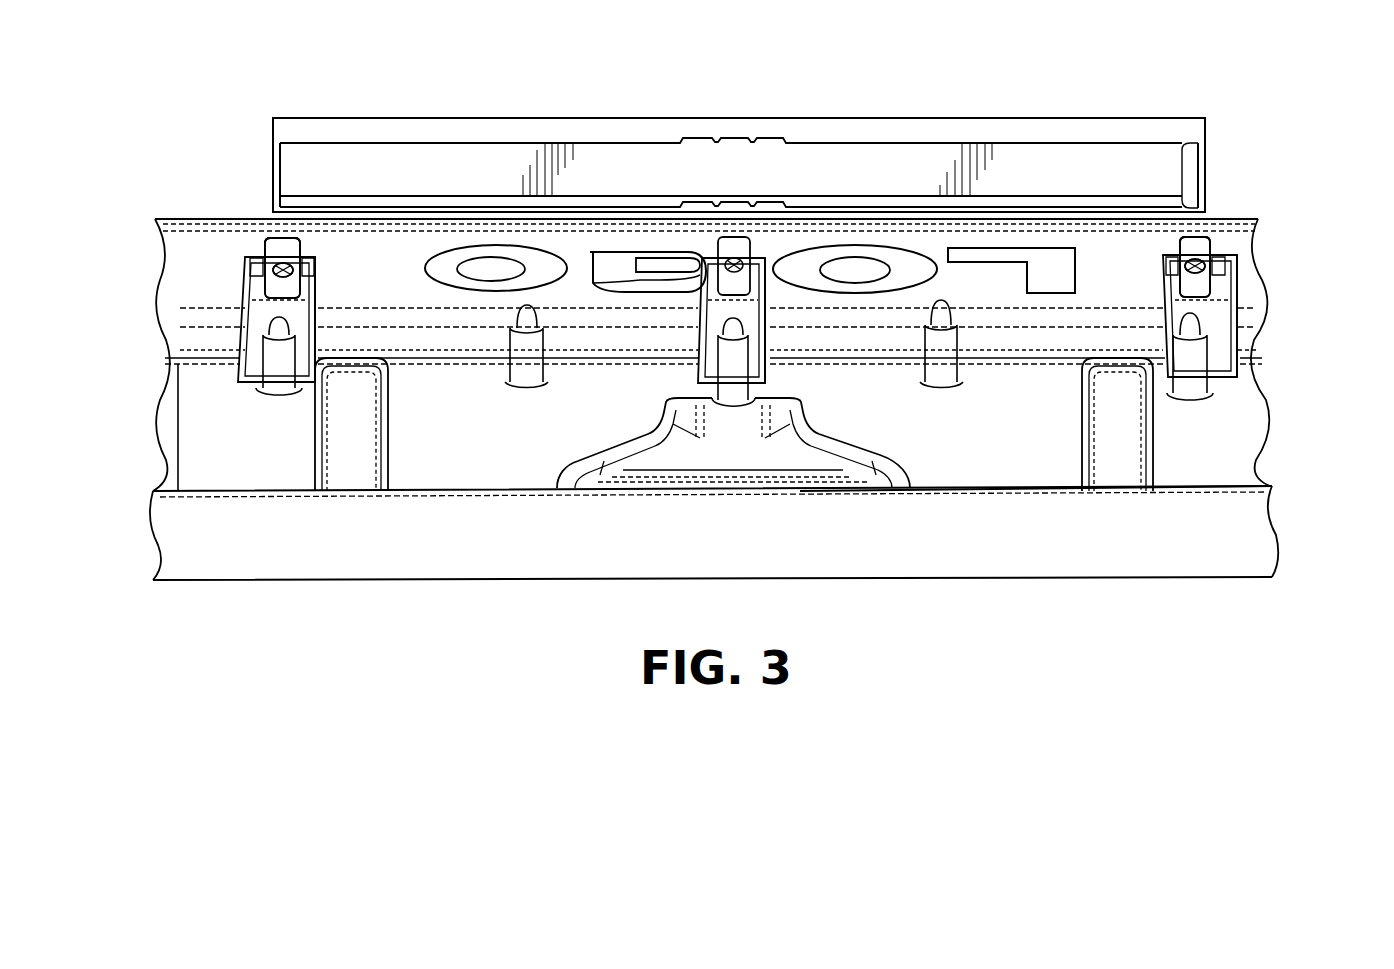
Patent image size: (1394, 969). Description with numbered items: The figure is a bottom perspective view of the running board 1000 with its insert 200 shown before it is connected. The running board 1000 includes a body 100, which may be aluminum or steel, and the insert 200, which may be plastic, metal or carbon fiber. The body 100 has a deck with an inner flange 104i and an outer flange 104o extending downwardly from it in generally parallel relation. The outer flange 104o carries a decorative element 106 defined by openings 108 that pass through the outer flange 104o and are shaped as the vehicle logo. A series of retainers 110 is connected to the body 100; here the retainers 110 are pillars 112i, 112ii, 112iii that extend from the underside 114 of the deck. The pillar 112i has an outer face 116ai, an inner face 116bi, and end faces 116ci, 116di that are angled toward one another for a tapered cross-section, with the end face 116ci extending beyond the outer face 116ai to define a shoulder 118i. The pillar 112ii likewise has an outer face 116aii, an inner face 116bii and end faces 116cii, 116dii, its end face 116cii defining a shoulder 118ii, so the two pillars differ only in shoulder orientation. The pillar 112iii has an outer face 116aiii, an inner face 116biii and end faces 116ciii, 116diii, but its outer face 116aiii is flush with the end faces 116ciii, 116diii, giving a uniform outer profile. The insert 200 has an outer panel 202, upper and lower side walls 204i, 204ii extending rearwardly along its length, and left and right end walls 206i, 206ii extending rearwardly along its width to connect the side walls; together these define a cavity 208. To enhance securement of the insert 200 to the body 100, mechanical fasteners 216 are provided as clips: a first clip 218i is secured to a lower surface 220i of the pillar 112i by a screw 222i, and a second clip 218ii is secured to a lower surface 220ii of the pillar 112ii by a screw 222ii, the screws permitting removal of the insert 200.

The body 100 is at (1226, 206).
The running board 1000 is at (1265, 190).
The outer flange 104o is at (193, 246).
The inner flange 104i is at (1276, 528).
The decorative element 106 is at (992, 276).
The openings 108 is at (1050, 283).
The retainers 110 is at (212, 335).
The pillar 112i is at (262, 324).
The pillar 112ii is at (1209, 308).
The pillar 112iii is at (749, 309).
The underside 114 is at (458, 466).
The outer face 116ai is at (301, 252).
The outer face 116aii is at (1170, 262).
The outer face 116aiii is at (753, 263).
The inner face 116bi is at (258, 354).
The inner face 116bii is at (1220, 345).
The inner face 116biii is at (706, 373).
The end face 116ci is at (246, 293).
The end face 116cii is at (1166, 292).
The end face 116ciii is at (698, 327).
The end face 116di is at (318, 286).
The end face 116dii is at (1234, 285).
The end face 116diii is at (770, 298).
The shoulder 118i is at (258, 262).
The shoulder 118ii is at (1212, 250).
The insert 200 is at (1050, 114).
The outer panel 202 is at (728, 118).
The side wall 204i is at (873, 200).
The side wall 204ii is at (956, 128).
The end wall 206i is at (1206, 155).
The end wall 206ii is at (272, 172).
The cavity 208 is at (547, 167).
The mechanical fasteners 216 is at (291, 234).
The first clip 218i is at (296, 250).
The second clip 218ii is at (1200, 240).
The lower surface 220i is at (294, 268).
The lower surface 220ii is at (1186, 264).
The screw 222i is at (276, 264).
The screw 222ii is at (1203, 268).